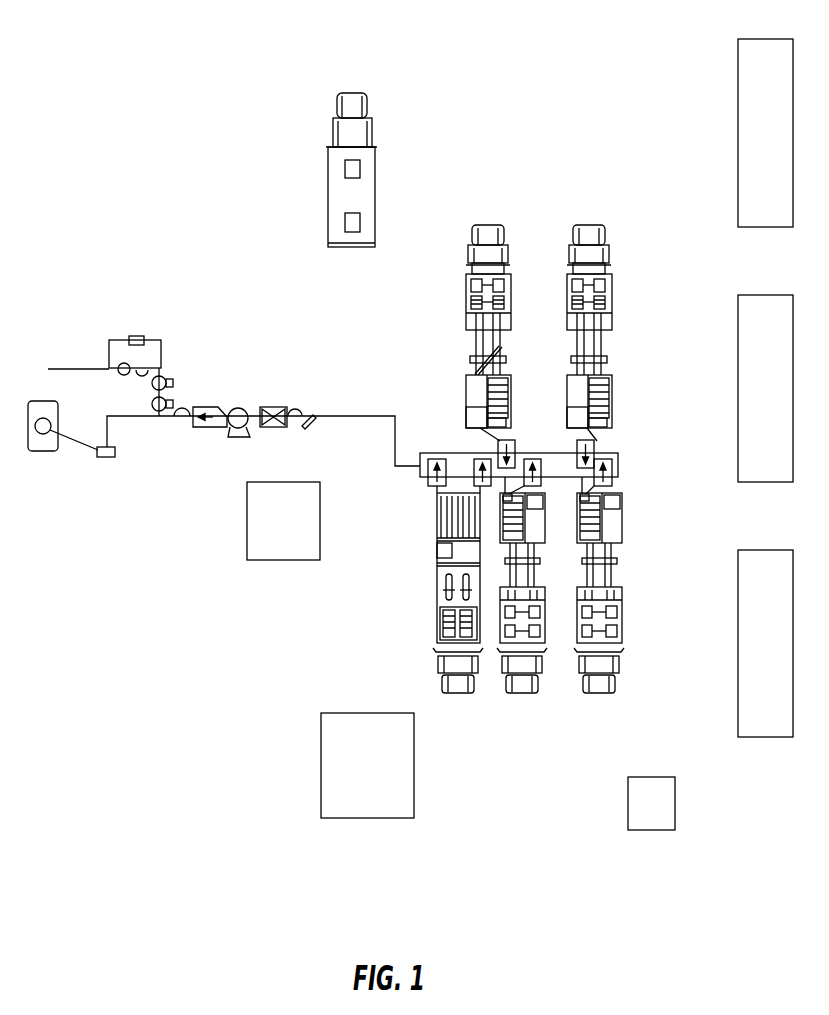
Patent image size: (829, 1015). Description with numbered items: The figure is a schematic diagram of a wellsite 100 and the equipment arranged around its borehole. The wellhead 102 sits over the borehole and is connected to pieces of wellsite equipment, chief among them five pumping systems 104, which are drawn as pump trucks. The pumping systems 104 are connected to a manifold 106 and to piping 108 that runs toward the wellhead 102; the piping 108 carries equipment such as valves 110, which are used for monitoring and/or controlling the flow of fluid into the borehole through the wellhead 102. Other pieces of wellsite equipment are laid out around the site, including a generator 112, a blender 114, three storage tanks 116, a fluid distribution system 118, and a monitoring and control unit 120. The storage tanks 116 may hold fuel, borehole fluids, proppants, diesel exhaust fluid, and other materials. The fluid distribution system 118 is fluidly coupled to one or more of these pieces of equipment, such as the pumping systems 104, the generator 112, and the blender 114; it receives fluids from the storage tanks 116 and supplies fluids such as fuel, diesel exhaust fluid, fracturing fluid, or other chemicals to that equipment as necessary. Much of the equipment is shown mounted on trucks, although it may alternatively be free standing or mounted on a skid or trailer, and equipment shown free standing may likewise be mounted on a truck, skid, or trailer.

The wellsite 100 is at (144, 142).
The wellhead 102 is at (42, 453).
The pumping systems 104 is at (590, 222).
The manifold 106 is at (420, 471).
The piping 108 is at (343, 416).
The valves 110 is at (225, 452).
The generator 112 is at (247, 530).
The blender 114 is at (675, 800).
The storage tanks 116 is at (738, 88).
The fluid distribution system 118 is at (321, 757).
The monitoring and control unit 120 is at (328, 195).